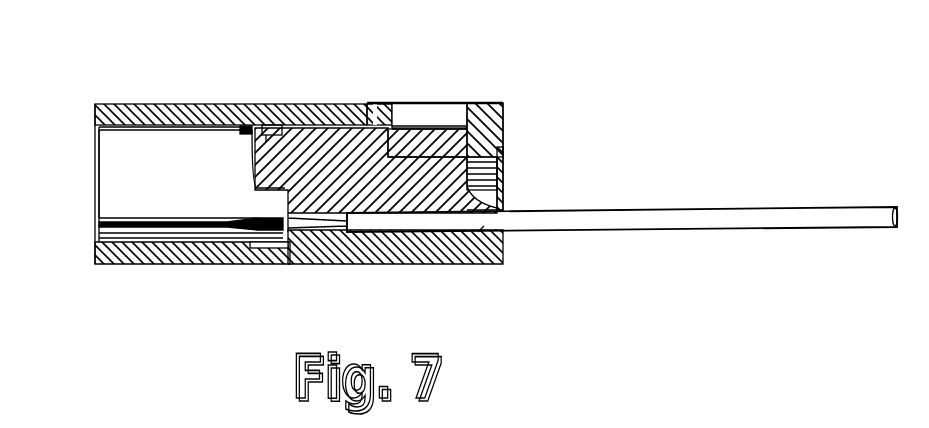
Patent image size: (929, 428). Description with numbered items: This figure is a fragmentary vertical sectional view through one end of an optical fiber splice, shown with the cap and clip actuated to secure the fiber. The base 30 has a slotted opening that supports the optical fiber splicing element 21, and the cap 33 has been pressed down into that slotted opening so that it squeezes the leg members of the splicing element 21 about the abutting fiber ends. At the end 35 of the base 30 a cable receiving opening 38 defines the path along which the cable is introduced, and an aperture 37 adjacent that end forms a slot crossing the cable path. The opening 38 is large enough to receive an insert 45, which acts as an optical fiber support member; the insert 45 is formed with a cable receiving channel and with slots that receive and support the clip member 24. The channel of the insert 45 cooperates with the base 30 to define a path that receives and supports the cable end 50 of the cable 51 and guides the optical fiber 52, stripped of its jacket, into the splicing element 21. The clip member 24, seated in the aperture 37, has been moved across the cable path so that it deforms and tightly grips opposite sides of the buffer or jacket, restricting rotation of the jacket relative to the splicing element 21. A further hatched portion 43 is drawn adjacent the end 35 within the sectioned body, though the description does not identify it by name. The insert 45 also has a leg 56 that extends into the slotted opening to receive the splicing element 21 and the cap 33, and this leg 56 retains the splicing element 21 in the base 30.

The optical fiber splicing element 21 is at (161, 189).
The clip member 24 is at (415, 112).
The base 30 is at (431, 264).
The cap 33 is at (153, 105).
The end of the base 35 is at (504, 120).
The aperture 37 is at (428, 124).
The cable receiving opening 38 is at (500, 166).
The insert 43 is at (447, 140).
The insert 45 is at (314, 142).
The cable end 50 is at (377, 229).
The cable 51 is at (787, 206).
The optical fiber 52 is at (265, 221).
The leg 56 is at (272, 127).